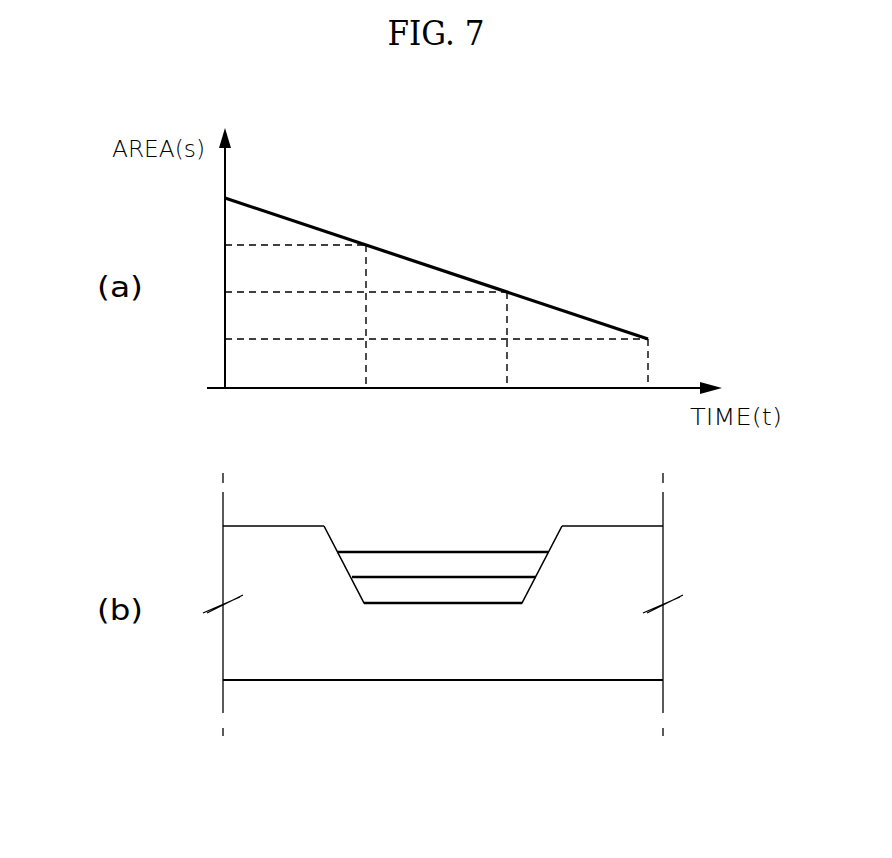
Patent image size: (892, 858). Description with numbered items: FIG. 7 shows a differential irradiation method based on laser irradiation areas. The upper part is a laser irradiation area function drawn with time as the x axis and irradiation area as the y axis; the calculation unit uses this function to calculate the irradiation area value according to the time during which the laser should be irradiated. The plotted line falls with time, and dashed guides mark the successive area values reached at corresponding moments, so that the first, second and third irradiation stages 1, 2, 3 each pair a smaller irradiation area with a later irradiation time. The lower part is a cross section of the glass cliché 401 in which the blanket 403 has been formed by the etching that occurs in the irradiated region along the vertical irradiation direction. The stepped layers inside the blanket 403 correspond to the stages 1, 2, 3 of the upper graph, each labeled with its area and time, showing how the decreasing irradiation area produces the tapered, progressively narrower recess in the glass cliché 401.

The glass cliché 401 is at (465, 652).
The blanket 403 is at (390, 526).
The first etch stage (area S1 at time t1) 1 is at (285, 326).
The second etch stage (area S2 at time t2) 2 is at (355, 349).
The third etch stage (area S3 at time t3) 3 is at (425, 373).